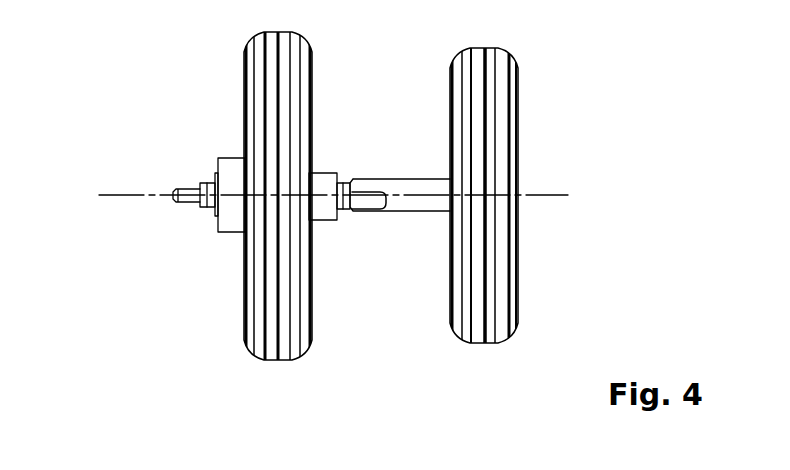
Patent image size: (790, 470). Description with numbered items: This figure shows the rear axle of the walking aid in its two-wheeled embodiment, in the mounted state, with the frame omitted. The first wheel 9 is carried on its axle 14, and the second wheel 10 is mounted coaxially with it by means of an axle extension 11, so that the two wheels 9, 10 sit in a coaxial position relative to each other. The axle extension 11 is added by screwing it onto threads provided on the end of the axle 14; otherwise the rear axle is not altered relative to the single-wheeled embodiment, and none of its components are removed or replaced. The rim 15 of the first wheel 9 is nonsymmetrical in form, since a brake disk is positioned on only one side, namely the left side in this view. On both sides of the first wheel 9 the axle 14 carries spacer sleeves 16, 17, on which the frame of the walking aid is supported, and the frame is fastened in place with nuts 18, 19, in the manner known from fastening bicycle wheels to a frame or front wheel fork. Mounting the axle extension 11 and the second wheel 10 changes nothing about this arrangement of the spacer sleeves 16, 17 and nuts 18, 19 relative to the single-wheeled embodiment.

The first wheel 9 is at (262, 65).
The second wheel 10 is at (502, 143).
The axle extension 11 is at (398, 164).
The axle 14 is at (173, 191).
The rim 15 is at (227, 212).
The spacer sleeve 16 is at (213, 180).
The spacer sleeve 17 is at (342, 177).
The nut 18 is at (200, 208).
The nut 19 is at (345, 212).